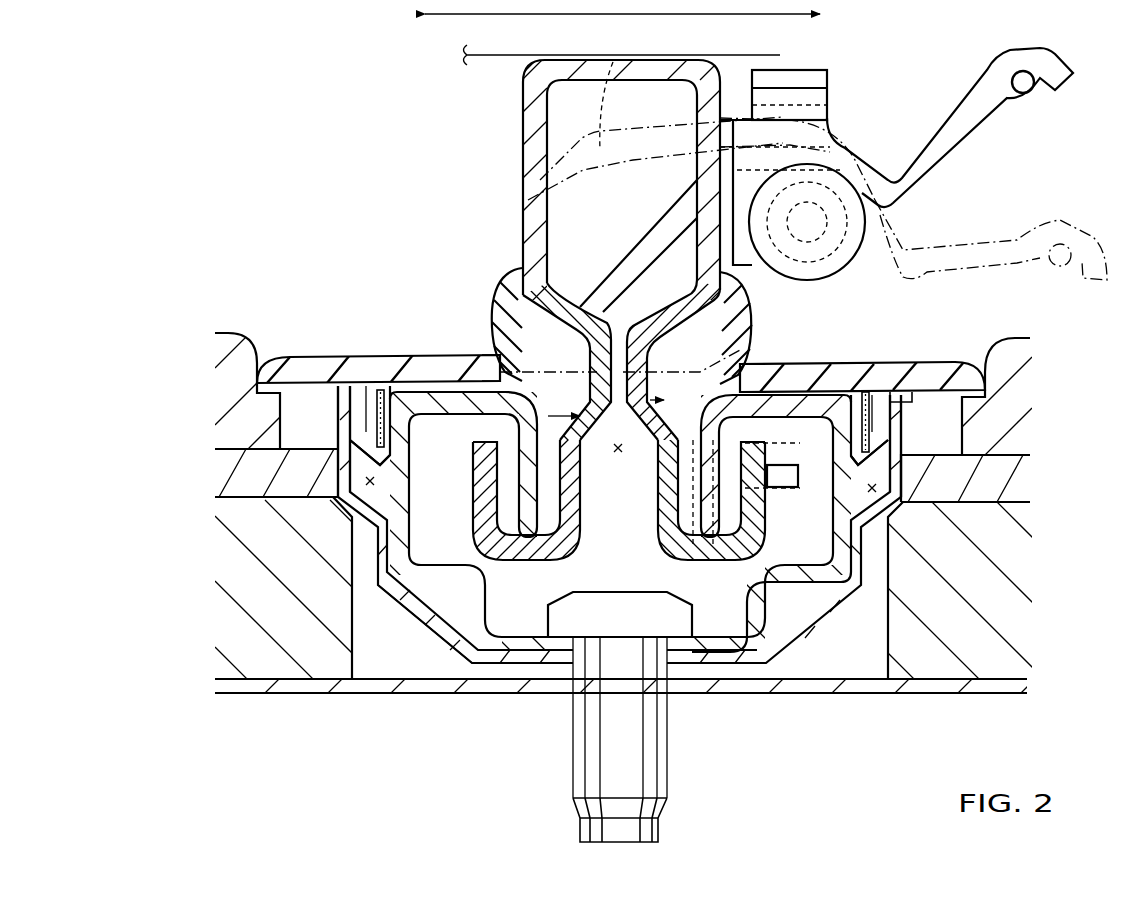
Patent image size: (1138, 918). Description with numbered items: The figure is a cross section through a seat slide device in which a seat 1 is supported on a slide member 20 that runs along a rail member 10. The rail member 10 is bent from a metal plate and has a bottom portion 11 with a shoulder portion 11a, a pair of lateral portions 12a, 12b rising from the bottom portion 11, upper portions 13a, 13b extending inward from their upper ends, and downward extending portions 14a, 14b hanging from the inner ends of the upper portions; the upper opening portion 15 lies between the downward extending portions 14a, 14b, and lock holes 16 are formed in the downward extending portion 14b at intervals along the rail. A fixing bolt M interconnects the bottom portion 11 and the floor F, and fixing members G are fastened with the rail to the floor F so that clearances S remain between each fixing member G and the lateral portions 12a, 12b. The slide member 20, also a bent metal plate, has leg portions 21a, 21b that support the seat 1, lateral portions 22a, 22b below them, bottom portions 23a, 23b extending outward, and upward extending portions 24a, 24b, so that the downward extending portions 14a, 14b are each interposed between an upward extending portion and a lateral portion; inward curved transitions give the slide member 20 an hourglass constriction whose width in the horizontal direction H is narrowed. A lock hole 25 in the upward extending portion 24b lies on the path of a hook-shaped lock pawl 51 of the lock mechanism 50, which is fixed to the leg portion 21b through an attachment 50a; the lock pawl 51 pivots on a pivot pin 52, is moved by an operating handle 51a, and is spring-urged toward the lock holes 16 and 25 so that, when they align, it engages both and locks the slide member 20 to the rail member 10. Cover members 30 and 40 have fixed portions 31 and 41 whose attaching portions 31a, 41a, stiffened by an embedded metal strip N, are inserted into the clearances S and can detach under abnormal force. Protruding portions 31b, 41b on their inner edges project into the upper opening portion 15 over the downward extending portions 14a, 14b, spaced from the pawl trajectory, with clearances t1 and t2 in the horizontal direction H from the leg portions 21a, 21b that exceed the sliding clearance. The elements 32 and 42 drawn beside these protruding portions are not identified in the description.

The seat 1 is at (497, 58).
The rail member 10 is at (452, 590).
The bottom portion 11 is at (551, 653).
The shoulder portion 11a is at (427, 578).
The lateral portion 12a is at (404, 486).
The lateral portion 12b is at (843, 488).
The upper portion 13a is at (447, 408).
The upper portion 13b is at (805, 408).
The downward extending portion 14a is at (511, 470).
The downward extending portion 14b is at (727, 490).
The upper opening portion 15 is at (618, 456).
The lock holes 16 is at (666, 636).
The slide member 20 is at (522, 125).
The leg portion 21a is at (535, 157).
The leg portion 21b is at (710, 190).
The lateral portion 22a is at (578, 494).
The lateral portion 22b is at (655, 500).
The bottom portion 23a is at (528, 551).
The bottom portion 23b is at (742, 556).
The upward extending portion 24a is at (480, 504).
The upward extending portion 24b is at (755, 521).
The lock hole 25 is at (770, 477).
The cover member 30 is at (337, 352).
The fixed portion 31 is at (428, 366).
The attaching portion 31a is at (380, 396).
The protruding portion 31b is at (502, 378).
The left elastic member 32 is at (495, 288).
The cover member 40 is at (931, 360).
The fixed portion 41 is at (858, 426).
The attaching portion 41a is at (866, 428).
The protruding portion 41b is at (742, 368).
The right elastic member 42 is at (745, 303).
The lock mechanism 50 is at (832, 72).
The attachment 50a is at (818, 112).
The lock pawl 51 is at (657, 235).
The operating handle 51a is at (977, 253).
The pivot pin 52 is at (808, 220).
The floor F is at (932, 686).
The fixing members G is at (372, 520).
The horizontal direction H is at (444, 22).
The fixing bolt M is at (632, 755).
The metal strip N is at (372, 413).
The clearances S is at (366, 481).
The clearance t1 is at (567, 312).
The clearance t2 is at (660, 330).